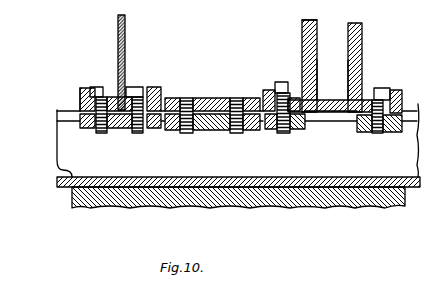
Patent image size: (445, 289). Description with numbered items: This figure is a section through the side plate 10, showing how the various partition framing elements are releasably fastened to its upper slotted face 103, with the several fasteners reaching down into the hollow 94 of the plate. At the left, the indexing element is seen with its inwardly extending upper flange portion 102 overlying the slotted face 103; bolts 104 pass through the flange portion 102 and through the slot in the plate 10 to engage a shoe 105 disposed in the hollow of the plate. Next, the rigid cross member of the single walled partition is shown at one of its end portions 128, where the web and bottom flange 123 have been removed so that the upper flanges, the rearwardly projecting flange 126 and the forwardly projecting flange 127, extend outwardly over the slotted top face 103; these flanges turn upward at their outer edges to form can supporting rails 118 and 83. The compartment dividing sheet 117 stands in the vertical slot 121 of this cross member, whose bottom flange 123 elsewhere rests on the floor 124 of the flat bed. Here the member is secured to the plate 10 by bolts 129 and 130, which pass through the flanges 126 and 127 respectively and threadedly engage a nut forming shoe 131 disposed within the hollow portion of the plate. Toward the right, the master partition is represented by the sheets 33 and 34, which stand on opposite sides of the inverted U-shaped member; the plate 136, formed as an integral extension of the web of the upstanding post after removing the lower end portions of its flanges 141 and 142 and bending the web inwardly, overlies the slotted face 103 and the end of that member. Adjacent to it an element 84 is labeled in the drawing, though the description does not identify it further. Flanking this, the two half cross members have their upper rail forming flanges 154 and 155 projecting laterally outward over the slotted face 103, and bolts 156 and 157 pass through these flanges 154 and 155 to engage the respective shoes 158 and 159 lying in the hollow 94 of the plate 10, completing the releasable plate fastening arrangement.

The side plate 10 is at (413, 111).
The sheet 33 is at (302, 40).
The sheet 34 is at (362, 42).
The can supporting rail 83 is at (157, 87).
The bearing block 84 is at (263, 90).
The hollow 94 is at (57, 162).
The upper flange portion 102 is at (208, 98).
The upper slotted face 103 is at (80, 110).
The bolts 104 is at (232, 129).
The shoe 105 is at (243, 134).
The compartment dividing sheet 117 is at (125, 20).
The can supporting rail 118 is at (88, 88).
The vertical slot 121 is at (418, 115).
The bottom flange 123 is at (444, 186).
The floor 124 is at (313, 177).
The rearwardly projecting flange 126 is at (80, 90).
The forwardly projecting flange 127 is at (168, 98).
The end portions 128 is at (105, 133).
The bolt 129 is at (97, 87).
The bolt 130 is at (134, 90).
The nut forming shoe 131 is at (138, 134).
The plate 136 is at (330, 100).
The flange 141 is at (318, 42).
The flange 142 is at (330, 76).
The upper rail forming flange 154 is at (270, 131).
The upper rail forming flange 155 is at (402, 92).
The bolt 156 is at (280, 82).
The bolt 157 is at (378, 88).
The shoe 158 is at (299, 131).
The shoe 159 is at (364, 133).